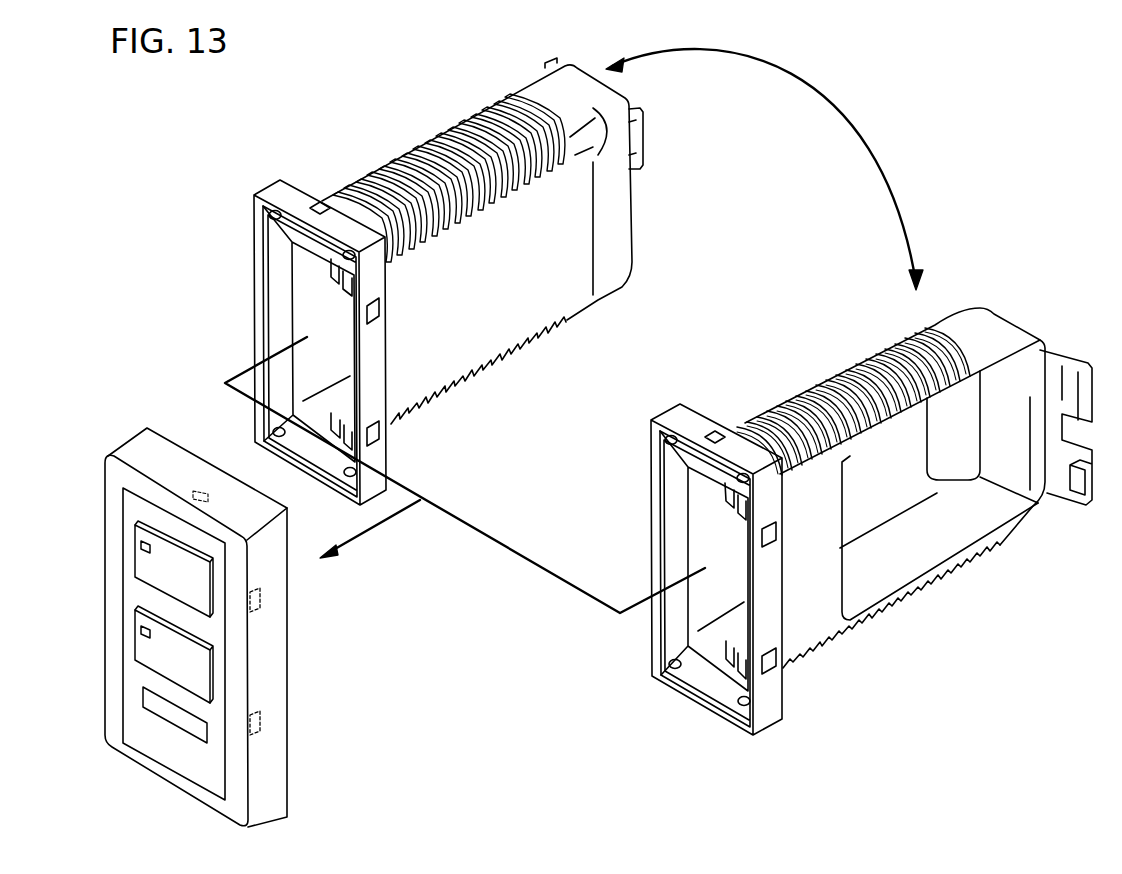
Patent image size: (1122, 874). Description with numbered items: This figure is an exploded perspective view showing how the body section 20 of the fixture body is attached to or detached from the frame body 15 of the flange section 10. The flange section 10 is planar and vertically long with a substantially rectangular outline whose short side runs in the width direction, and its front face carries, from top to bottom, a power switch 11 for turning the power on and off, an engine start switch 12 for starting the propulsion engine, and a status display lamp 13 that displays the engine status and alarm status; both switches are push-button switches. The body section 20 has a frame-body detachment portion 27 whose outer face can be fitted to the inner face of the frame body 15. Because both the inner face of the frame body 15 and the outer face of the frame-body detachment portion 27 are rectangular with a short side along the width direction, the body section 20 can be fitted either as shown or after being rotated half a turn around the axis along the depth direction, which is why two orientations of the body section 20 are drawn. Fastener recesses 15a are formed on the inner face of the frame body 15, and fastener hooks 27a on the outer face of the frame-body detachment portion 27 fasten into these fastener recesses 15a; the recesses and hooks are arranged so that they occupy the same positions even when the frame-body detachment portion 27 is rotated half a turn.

The flange section 10 is at (202, 594).
The power switch 11 is at (140, 560).
The engine start switch 12 is at (140, 645).
The status display lamp 13 is at (145, 705).
The frame body 15 is at (125, 440).
The fastener recesses 15a is at (260, 598).
The body section 20 is at (526, 80).
The frame-body detachment portion 27 is at (272, 182).
The fastener hooks 27a is at (379, 309).